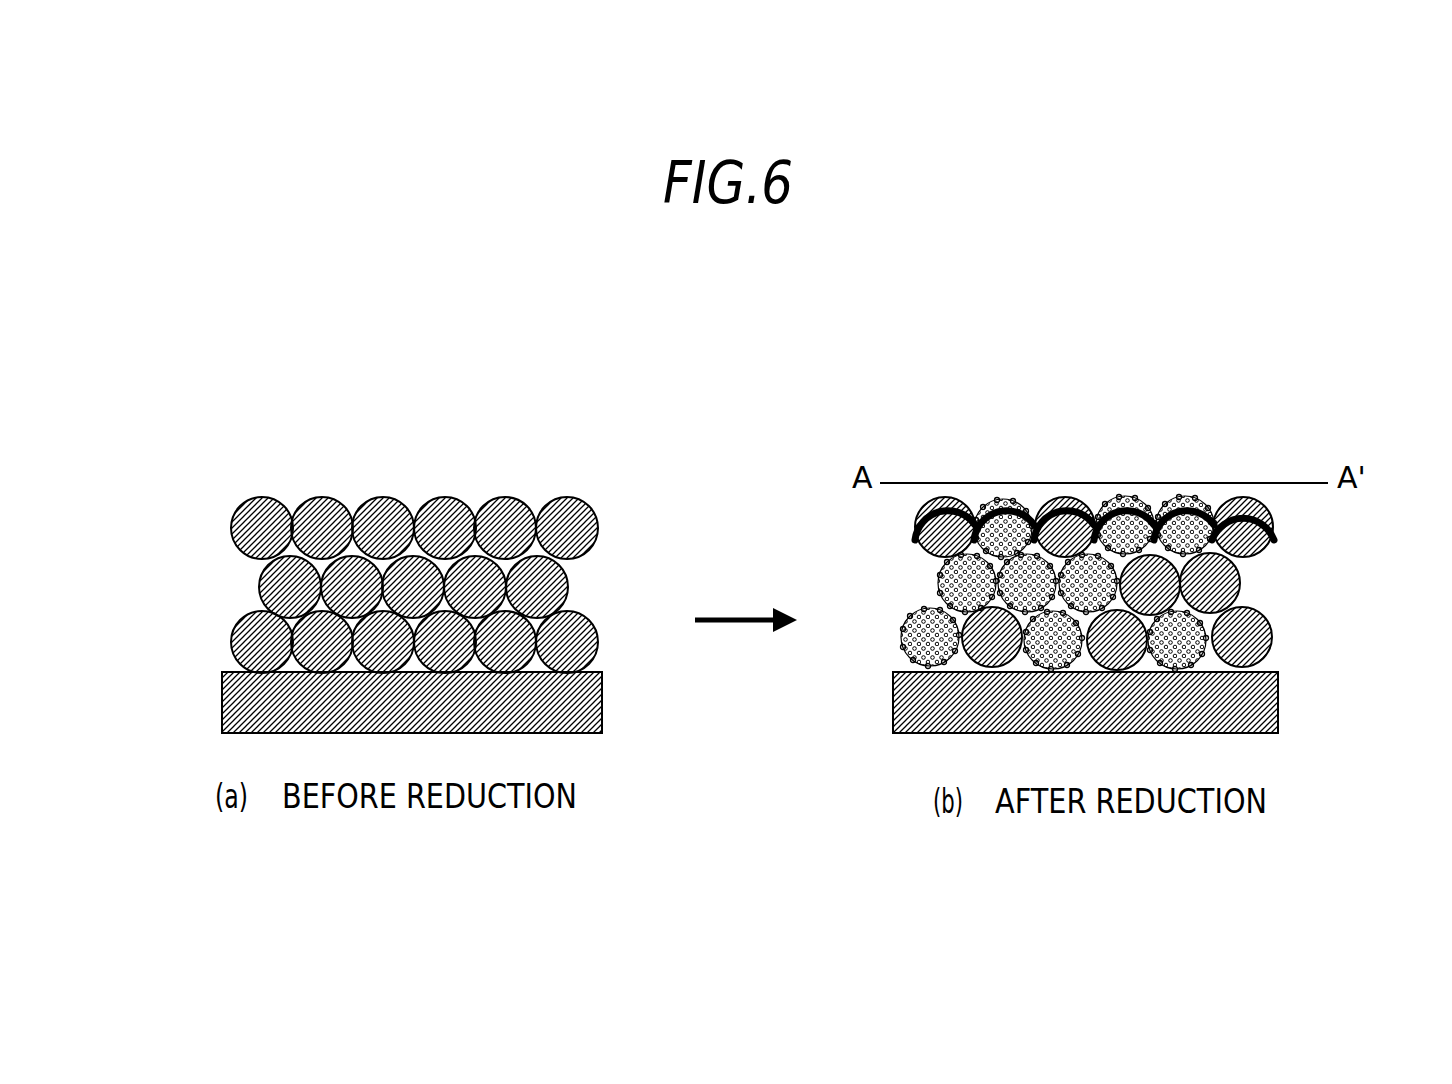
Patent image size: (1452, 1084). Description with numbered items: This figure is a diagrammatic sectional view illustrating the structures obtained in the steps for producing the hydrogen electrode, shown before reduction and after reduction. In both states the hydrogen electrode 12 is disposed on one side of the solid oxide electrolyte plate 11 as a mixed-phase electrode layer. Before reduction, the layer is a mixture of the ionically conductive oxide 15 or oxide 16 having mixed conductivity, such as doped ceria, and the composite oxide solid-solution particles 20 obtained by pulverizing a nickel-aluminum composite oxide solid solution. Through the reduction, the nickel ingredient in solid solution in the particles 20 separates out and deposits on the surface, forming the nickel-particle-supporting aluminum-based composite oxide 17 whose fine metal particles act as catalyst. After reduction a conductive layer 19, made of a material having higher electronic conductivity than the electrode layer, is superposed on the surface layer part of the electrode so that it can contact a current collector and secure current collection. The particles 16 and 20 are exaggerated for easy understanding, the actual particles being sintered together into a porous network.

The solid oxide electrolyte plate 11 is at (565, 710).
The hydrogen electrode 12 is at (180, 505).
The ionically conductive oxide 15 is at (831, 502).
The oxide having mixed conductivity 16 is at (253, 530).
The aluminum-based composite oxide 17 is at (1125, 537).
The conductive layer 19 is at (920, 510).
The composite oxide solid-solution particles 20 is at (445, 530).